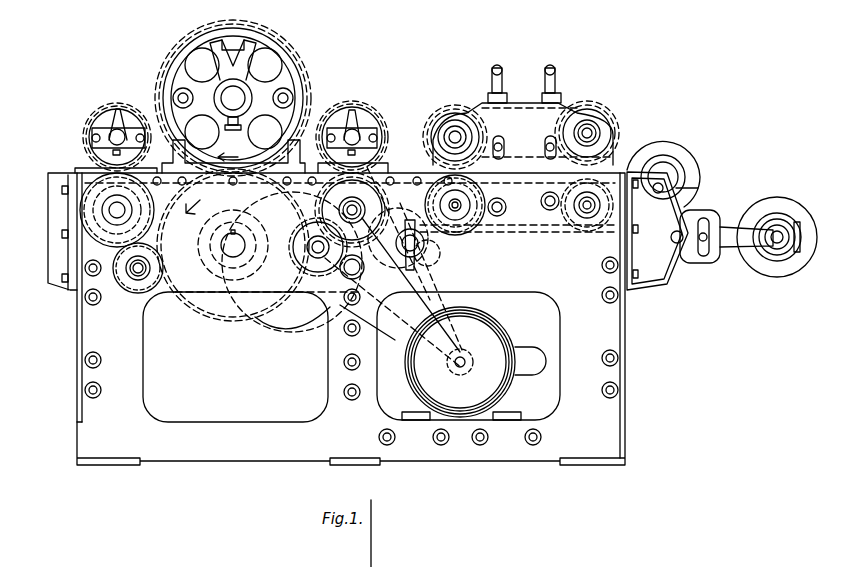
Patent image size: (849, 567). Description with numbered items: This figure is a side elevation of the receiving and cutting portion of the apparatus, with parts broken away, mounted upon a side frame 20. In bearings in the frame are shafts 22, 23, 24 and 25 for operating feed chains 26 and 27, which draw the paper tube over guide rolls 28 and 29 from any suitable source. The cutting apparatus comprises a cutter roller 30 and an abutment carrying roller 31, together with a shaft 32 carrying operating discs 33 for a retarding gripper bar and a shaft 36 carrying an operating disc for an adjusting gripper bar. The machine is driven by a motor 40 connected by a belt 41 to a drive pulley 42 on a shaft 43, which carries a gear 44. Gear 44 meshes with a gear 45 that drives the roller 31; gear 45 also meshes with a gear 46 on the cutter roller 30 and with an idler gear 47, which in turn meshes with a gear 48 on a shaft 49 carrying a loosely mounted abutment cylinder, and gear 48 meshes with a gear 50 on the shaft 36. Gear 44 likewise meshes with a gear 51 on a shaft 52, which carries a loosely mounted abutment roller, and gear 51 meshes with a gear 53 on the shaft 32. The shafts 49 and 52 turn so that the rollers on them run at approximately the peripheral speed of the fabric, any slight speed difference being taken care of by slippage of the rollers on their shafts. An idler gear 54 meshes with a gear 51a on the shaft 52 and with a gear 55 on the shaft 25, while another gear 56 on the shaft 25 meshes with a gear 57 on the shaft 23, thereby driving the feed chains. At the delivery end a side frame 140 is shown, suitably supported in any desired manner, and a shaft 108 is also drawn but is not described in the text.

The side frame 20 is at (616, 325).
The shaft 22 is at (592, 130).
The shaft 23 is at (454, 134).
The shaft 24 is at (587, 208).
The shaft 25 is at (470, 222).
The feed chain 26 is at (583, 108).
The feed chain 27 is at (555, 232).
The guide roll 28 is at (790, 205).
The guide roll 29 is at (680, 158).
The cutter roller 30 is at (286, 72).
The abutment carrying roller 31 is at (208, 312).
The shaft 32 is at (353, 135).
The operating disc 33 is at (368, 118).
The shaft 36 is at (114, 136).
The motor 40 is at (495, 335).
The belt 41 is at (396, 343).
The drive pulley 42 is at (358, 277).
The shaft 43 is at (322, 252).
The gear 44 is at (316, 258).
The gear 45 is at (172, 292).
The gear 46 is at (192, 46).
The idler gear 47 is at (118, 283).
The gear 48 is at (85, 210).
The shaft 49 is at (115, 212).
The gear 50 is at (102, 106).
The gear 51 is at (378, 178).
The gear 51a is at (390, 210).
The shaft 52 is at (353, 208).
The gear 53 is at (385, 121).
The idler gear 54 is at (425, 265).
The gear 55 is at (459, 210).
The gear 56 is at (495, 219).
The gear 57 is at (385, 170).
The shaft 108 is at (230, 246).
The side frame 140 is at (52, 260).